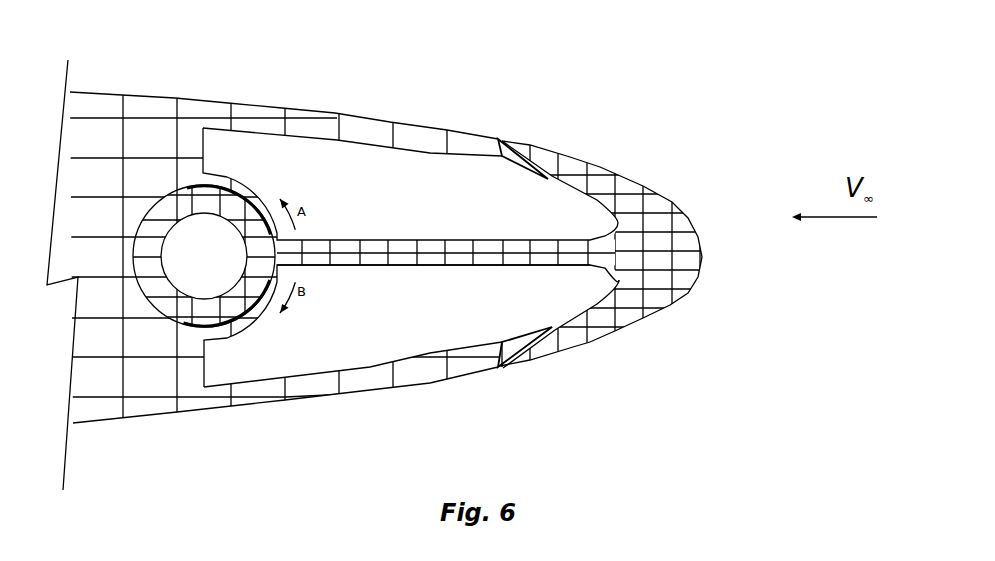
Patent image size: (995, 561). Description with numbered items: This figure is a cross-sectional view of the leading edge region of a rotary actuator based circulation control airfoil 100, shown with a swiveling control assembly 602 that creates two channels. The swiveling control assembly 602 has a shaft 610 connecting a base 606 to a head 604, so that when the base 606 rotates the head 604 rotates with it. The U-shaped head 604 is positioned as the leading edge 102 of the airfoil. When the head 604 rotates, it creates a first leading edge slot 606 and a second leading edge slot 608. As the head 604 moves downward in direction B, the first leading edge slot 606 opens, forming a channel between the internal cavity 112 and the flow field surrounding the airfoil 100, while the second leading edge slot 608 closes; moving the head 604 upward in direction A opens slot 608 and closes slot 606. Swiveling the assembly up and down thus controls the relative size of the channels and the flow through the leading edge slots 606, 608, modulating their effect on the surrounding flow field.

The airfoil 100 is at (303, 107).
The leading edge 102 is at (672, 200).
The internal cavity 112 is at (405, 200).
The swiveling control assembly 602 is at (382, 270).
The head 604 is at (613, 173).
The first leading edge slot 606 is at (490, 138).
The second leading edge slot 608 is at (498, 367).
The shaft 610 is at (510, 267).